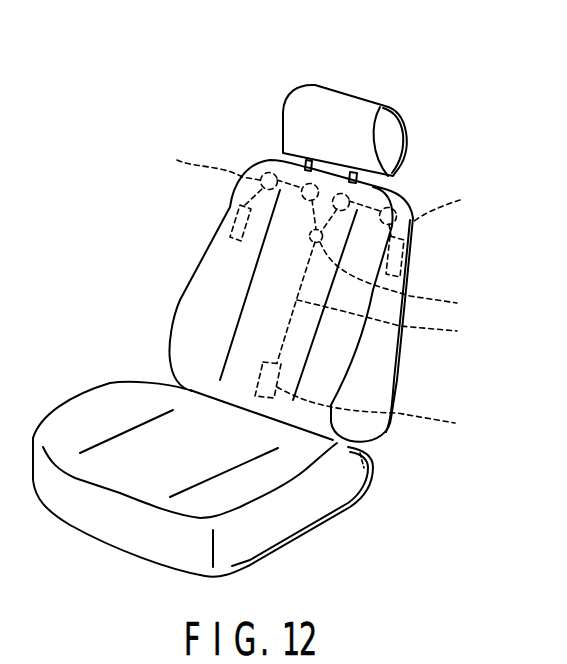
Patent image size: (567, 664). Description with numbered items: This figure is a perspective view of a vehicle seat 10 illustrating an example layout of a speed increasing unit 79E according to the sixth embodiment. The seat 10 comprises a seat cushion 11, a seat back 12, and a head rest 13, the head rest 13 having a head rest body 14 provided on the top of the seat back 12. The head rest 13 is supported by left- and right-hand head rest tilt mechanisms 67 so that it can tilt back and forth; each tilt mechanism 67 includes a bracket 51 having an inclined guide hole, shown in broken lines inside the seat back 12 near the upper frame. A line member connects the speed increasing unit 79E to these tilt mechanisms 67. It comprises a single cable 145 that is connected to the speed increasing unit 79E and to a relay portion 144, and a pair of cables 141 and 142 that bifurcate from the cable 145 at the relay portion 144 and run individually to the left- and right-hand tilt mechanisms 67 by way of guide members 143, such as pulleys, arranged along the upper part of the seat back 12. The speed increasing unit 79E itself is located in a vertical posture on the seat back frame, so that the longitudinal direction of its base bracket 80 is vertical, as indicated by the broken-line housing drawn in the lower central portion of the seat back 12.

The vehicle seat 10 is at (191, 137).
The seat cushion 11 is at (140, 443).
The seat back 12 is at (267, 271).
The head rest 13 is at (281, 88).
The head rest body 14 is at (358, 103).
The bracket 51 is at (224, 216).
The head rest tilt mechanism 67 is at (214, 195).
The speed increasing unit 79E is at (291, 353).
The base bracket 80 is at (380, 427).
The cable 141 is at (200, 160).
The cable 142 is at (454, 204).
The guide member 143 is at (258, 168).
The relay portion 144 is at (407, 280).
The cable 145 is at (395, 323).